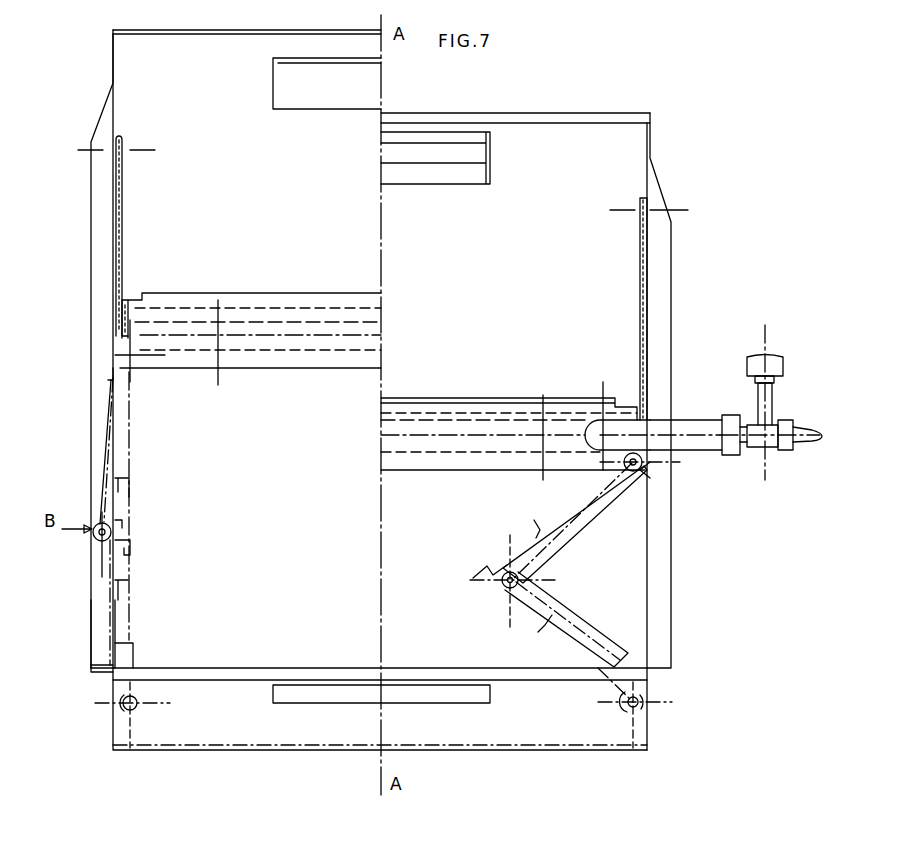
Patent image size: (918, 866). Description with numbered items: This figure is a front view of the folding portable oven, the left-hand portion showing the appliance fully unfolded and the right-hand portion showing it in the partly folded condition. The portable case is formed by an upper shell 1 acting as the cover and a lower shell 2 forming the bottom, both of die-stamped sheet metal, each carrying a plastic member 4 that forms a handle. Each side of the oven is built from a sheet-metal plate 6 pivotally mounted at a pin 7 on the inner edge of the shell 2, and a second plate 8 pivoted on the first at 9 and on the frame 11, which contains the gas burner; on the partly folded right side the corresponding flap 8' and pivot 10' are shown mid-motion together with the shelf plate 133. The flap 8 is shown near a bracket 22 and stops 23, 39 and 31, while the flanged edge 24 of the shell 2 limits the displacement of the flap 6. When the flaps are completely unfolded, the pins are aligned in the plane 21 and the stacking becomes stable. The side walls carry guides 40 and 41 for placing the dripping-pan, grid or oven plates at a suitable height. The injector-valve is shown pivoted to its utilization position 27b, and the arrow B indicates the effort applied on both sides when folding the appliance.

The shell 1 is at (100, 70).
The shell 2 is at (159, 761).
The handle member 4 is at (323, 74).
The sheet-metal plate 6 is at (102, 620).
The pivot pin 7 is at (142, 703).
The plate 8 is at (85, 446).
The door panel 8' is at (591, 518).
The pivot 9 is at (95, 541).
The pivot bearing 10' is at (672, 492).
The frame 11 is at (378, 327).
The plane 21 is at (128, 443).
The bracket 22 is at (127, 517).
The lower edge 23 is at (94, 658).
The flanged edge 24 is at (104, 681).
The utilization position of injector-valve 27b is at (696, 440).
The block 31 is at (122, 652).
The catch 39 is at (140, 553).
The guide 40 is at (128, 469).
The guide 41 is at (135, 582).
The shelf plate 133 is at (240, 299).